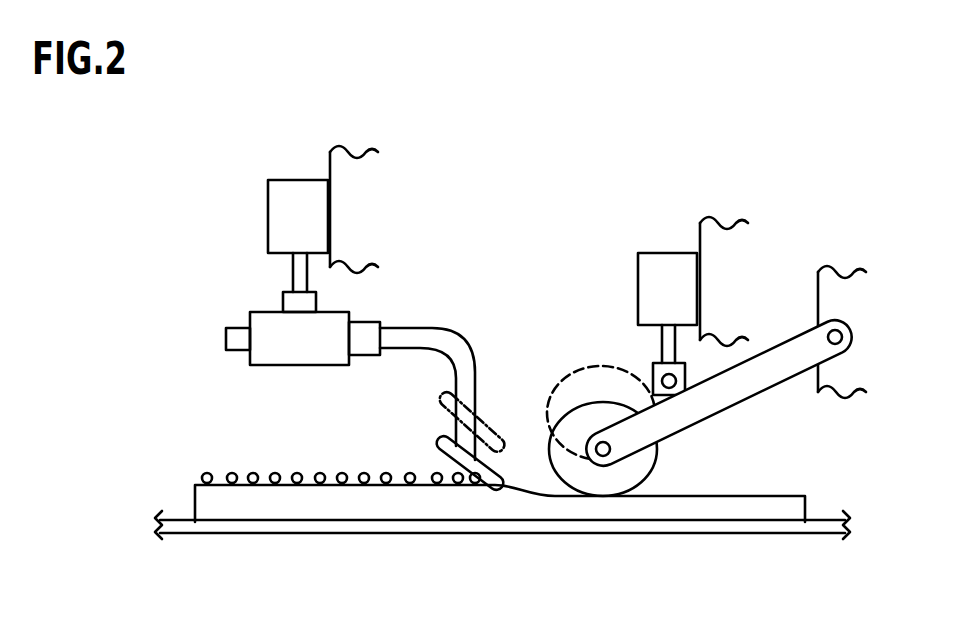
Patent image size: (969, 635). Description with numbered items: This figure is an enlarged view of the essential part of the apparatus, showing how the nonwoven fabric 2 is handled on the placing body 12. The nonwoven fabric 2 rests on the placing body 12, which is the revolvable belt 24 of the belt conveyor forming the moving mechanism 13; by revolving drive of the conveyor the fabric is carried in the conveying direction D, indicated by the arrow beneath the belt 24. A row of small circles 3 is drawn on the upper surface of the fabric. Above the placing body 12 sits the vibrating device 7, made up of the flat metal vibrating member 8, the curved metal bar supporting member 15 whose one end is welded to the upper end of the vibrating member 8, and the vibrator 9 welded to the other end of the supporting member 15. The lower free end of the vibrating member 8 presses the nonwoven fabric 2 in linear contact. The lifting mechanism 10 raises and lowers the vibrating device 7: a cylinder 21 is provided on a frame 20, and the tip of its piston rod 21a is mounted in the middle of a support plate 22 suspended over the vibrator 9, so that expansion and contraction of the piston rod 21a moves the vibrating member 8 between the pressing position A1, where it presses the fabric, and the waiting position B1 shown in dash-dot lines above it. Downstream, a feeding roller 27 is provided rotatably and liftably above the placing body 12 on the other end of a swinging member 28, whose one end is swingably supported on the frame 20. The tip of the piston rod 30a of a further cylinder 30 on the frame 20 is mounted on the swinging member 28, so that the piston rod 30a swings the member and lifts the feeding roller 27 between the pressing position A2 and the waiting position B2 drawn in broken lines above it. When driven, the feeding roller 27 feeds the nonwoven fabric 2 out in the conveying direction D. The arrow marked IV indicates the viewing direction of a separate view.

The nonwoven fabric 2 is at (220, 480).
The particles 3 is at (296, 473).
The vibrating device 7 is at (422, 252).
The vibrating member 8 is at (493, 425).
The vibrator 9 is at (273, 365).
The lifting mechanism 10 is at (333, 314).
The placing body 12 is at (185, 537).
The moving mechanism 13 is at (502, 565).
The supporting member 15 is at (420, 328).
The frame 20 is at (327, 162).
The cylinder 21 is at (267, 217).
The piston rod 21a is at (290, 267).
The support plate 22 is at (283, 300).
The belt 24 is at (298, 535).
The feeding roller 27 is at (607, 366).
The swinging member 28 is at (765, 395).
The cylinder 30 is at (636, 285).
The piston rod 30a is at (658, 343).
The pressing position A1 is at (450, 462).
The pressing position A2 is at (665, 450).
The waiting position B1 is at (508, 430).
The waiting position B2 is at (577, 360).
The conveying direction D is at (595, 570).
The section line IV is at (526, 160).